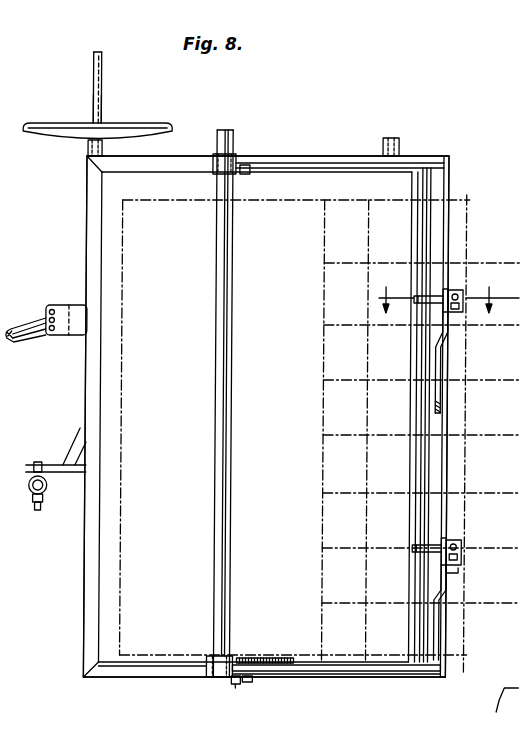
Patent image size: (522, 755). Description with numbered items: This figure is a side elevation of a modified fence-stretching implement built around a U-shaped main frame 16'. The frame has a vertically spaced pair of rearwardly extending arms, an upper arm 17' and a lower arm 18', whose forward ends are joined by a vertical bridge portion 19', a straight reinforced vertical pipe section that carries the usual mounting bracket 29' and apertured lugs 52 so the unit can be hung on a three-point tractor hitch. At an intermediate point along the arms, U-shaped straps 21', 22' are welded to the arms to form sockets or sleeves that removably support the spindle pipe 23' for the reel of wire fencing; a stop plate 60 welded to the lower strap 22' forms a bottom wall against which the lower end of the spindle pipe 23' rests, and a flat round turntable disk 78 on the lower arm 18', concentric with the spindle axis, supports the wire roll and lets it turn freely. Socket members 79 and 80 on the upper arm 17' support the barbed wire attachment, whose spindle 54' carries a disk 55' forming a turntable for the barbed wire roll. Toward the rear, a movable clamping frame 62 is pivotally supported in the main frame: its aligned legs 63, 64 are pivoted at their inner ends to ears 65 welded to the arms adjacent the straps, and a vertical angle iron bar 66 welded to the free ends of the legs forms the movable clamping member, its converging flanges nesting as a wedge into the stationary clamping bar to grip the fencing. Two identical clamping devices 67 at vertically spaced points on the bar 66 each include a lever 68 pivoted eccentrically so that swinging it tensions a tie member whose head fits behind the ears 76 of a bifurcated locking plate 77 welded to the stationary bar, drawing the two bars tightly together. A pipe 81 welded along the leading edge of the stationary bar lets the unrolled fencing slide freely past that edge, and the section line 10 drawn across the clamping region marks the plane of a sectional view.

The section line 10- 10 is at (449, 304).
The U-shaped main frame 16' is at (247, 431).
The upper arm 17' is at (268, 136).
The lower arm 18' is at (264, 688).
The vertical bridge portion 19' is at (120, 416).
The U-shaped strap 21' is at (206, 175).
The U-shaped strap 22' is at (200, 650).
The spindle pipe 23' is at (247, 403).
The mounting bracket 29' is at (56, 469).
The apertured lugs 52 is at (68, 306).
The spindle 54' is at (115, 82).
The disk 55' is at (105, 115).
The stop plate 60 is at (237, 680).
The movable clamping frame 62 is at (318, 676).
The leg 63 is at (295, 160).
The leg 64 is at (278, 665).
The ears 65 is at (248, 169).
The vertical angle iron bar 66 is at (440, 188).
The clamping devices 67 is at (438, 288).
The lever 68 is at (444, 372).
The ears 76 is at (463, 298).
The bifurcated locking plate 77 is at (456, 573).
The turntable disk 78 is at (247, 657).
The socket member 79 is at (87, 148).
The socket member 80 is at (399, 148).
The pipe 81 is at (410, 486).